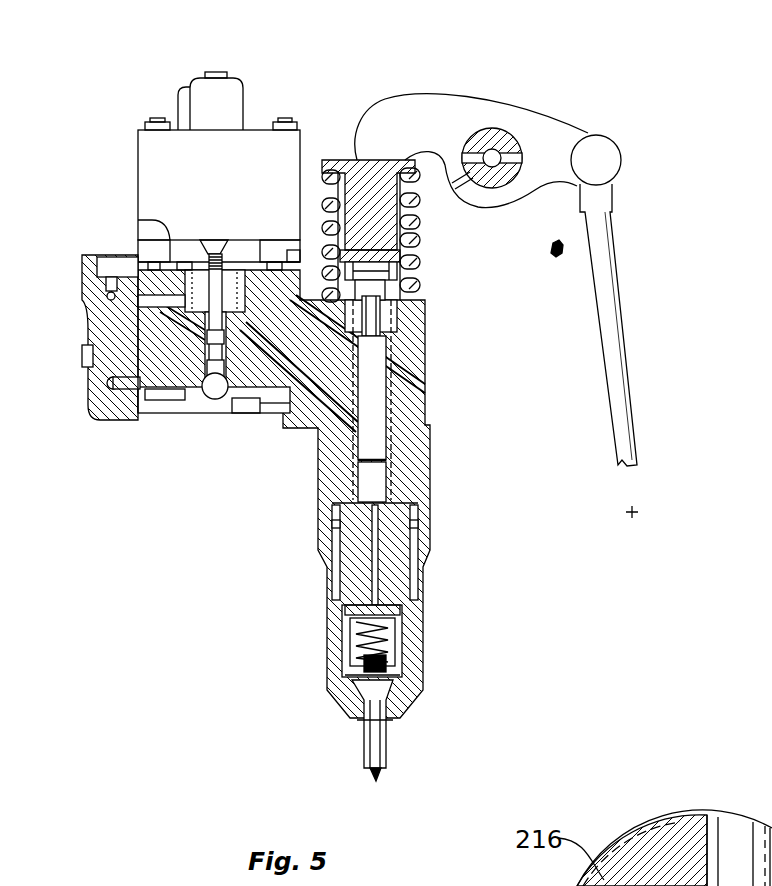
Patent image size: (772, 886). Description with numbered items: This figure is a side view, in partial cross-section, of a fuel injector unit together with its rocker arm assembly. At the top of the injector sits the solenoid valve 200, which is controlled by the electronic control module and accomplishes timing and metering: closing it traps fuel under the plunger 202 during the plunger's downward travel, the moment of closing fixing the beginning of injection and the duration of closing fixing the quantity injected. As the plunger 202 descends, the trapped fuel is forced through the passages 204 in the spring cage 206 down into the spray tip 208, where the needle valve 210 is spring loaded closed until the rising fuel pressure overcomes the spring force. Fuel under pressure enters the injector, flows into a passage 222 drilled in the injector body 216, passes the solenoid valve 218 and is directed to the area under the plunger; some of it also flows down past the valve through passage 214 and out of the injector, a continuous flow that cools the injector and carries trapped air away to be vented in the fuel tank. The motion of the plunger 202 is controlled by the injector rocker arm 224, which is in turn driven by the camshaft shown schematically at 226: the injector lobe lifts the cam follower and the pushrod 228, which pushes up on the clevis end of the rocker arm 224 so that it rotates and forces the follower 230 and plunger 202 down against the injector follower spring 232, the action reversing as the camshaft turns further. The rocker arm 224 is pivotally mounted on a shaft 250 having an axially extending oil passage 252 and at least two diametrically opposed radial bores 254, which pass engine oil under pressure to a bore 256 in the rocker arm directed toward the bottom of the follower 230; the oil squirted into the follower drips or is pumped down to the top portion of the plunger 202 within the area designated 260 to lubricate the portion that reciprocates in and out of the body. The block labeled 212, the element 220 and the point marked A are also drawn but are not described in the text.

The solenoid valve 200 is at (258, 135).
The plunger 202 is at (373, 410).
The passages 204 is at (353, 638).
The spring cage 206 is at (402, 643).
The spray tip 208 is at (390, 745).
The needle valve 210 is at (372, 737).
The fuel inlet block 212 is at (107, 262).
The passage 214 is at (160, 392).
The injector body 216 is at (157, 342).
The solenoid valve 218 is at (232, 372).
The plunger 220 is at (378, 482).
The passage 222 is at (138, 297).
The injector rocker arm 224 is at (492, 90).
The camshaft 226 is at (632, 512).
The pushrod 228 is at (617, 340).
The follower 230 is at (347, 158).
The injector follower spring 232 is at (422, 258).
The shaft 250 is at (507, 140).
The axially extending oil passage 252 is at (518, 152).
The radial bores 254 is at (520, 158).
The bore 256 is at (452, 182).
The area 260 is at (390, 313).
The reference point A is at (212, 412).